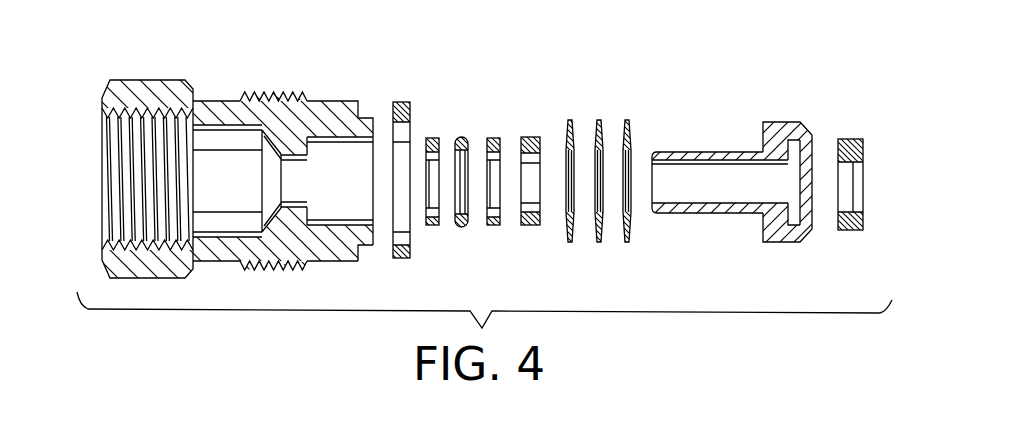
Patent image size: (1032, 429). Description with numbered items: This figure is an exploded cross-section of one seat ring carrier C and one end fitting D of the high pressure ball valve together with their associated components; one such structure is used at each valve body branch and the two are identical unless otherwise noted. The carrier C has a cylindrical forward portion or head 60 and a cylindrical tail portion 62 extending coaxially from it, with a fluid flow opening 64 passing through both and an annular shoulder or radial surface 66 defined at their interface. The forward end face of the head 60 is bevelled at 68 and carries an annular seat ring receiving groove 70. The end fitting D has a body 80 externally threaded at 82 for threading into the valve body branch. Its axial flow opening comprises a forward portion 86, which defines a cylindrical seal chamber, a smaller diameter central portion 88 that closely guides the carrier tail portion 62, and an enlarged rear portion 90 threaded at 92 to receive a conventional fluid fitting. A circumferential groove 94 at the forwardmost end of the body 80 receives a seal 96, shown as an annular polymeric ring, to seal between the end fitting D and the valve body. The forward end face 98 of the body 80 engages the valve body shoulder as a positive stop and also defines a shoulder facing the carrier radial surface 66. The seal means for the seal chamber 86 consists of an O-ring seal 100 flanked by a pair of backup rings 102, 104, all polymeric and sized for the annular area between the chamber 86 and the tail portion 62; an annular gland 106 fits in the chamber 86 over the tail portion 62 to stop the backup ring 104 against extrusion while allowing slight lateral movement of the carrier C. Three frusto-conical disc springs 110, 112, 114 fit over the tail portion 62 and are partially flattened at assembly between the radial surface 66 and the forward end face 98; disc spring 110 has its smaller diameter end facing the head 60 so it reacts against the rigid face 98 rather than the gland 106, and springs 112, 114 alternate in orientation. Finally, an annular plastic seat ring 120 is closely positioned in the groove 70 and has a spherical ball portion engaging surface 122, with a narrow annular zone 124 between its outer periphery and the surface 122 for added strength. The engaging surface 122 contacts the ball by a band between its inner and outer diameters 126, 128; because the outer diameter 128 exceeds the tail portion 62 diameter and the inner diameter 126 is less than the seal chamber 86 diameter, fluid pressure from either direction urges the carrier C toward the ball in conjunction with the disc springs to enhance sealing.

The head 60 is at (777, 130).
The tail portion 62 is at (673, 157).
The fluid flow opening 64 is at (703, 204).
The annular shoulder 66 is at (765, 238).
The bevelled forward end face 68 is at (804, 130).
The seat ring receiving groove 70 is at (808, 218).
The body 80 is at (203, 113).
The external threads 82 is at (288, 265).
The forward portion 86 is at (316, 145).
The central portion 88 is at (297, 212).
The rear portion 90 is at (212, 232).
The threads 92 is at (137, 110).
The circumferential groove 94 is at (365, 105).
The seal 96 is at (400, 105).
The forward end face 98 is at (383, 246).
The O-ring seal 100 is at (463, 137).
The backup ring 102 is at (430, 227).
The backup ring 104 is at (493, 227).
The annular gland 106 is at (531, 137).
The disc spring 110 is at (569, 243).
The disc spring 112 is at (599, 120).
The disc spring 114 is at (625, 243).
The seat ring 120 is at (853, 137).
The ball portion engaging surface 122 is at (860, 153).
The narrow annular zone 124 is at (860, 227).
The inner diameter 126 is at (860, 212).
The outer diameter 128 is at (858, 145).
The seat ring carrier C is at (712, 148).
The end fitting D is at (262, 91).